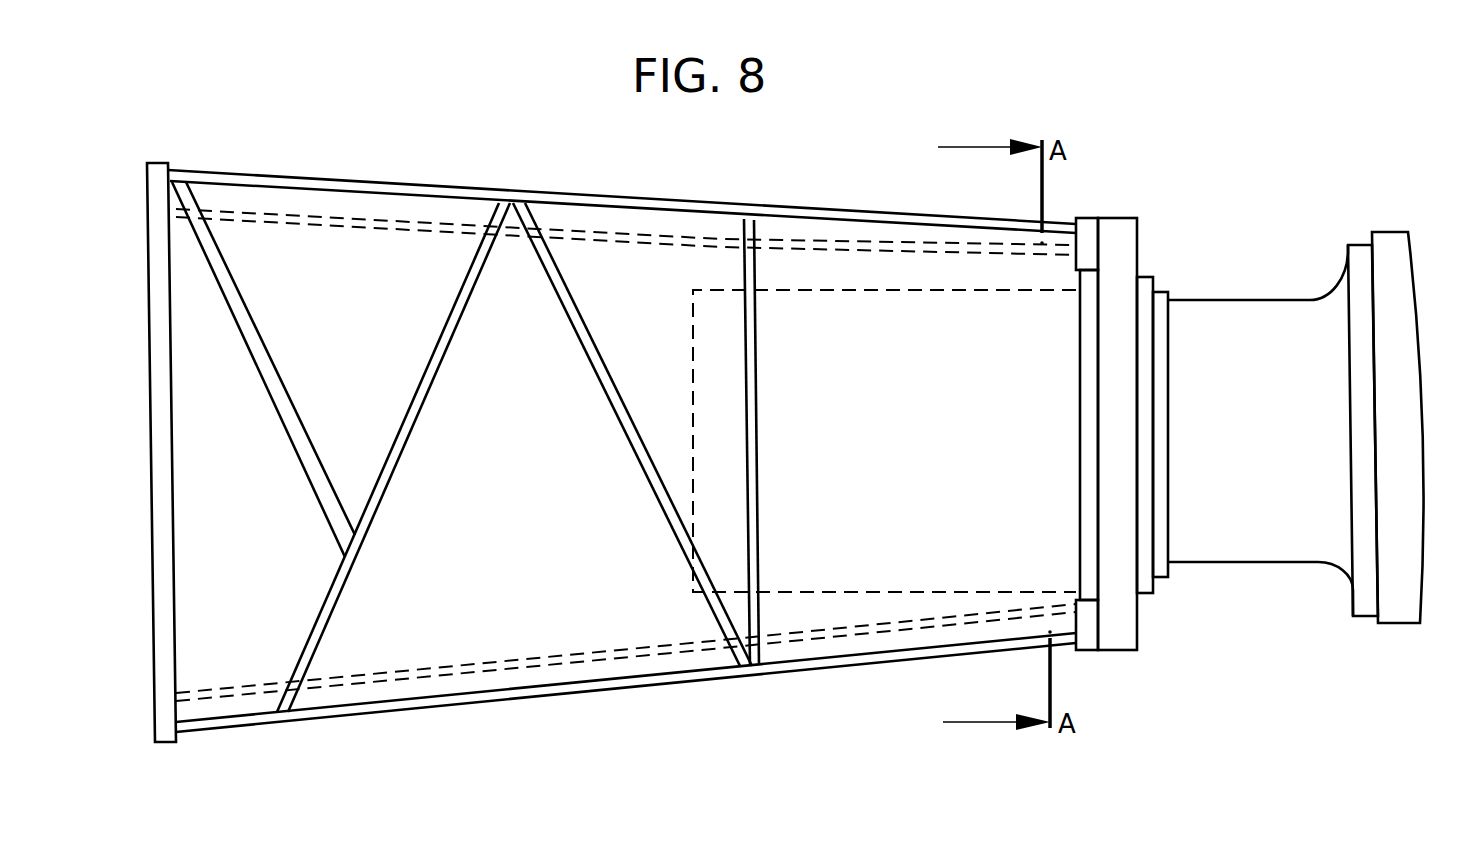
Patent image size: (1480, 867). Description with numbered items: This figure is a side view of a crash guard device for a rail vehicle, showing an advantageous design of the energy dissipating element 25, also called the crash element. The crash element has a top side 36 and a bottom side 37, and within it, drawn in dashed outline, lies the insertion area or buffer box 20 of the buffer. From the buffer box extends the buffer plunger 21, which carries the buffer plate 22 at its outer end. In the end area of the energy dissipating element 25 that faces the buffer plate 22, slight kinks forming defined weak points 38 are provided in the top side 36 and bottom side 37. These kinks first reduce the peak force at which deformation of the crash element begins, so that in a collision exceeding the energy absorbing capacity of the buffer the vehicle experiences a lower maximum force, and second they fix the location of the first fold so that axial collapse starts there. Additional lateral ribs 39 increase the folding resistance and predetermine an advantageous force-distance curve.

The insertion area or buffer box 20 is at (822, 578).
The buffer plunger 21 is at (1253, 538).
The buffer plate 22 is at (1404, 412).
The energy dissipating element 25 is at (733, 692).
The top side of the crash element 36 is at (598, 238).
The bottom side of the crash element 37 is at (565, 656).
The defined weak points 38 is at (957, 252).
The ribs to increase resistance to folding 39 is at (352, 559).